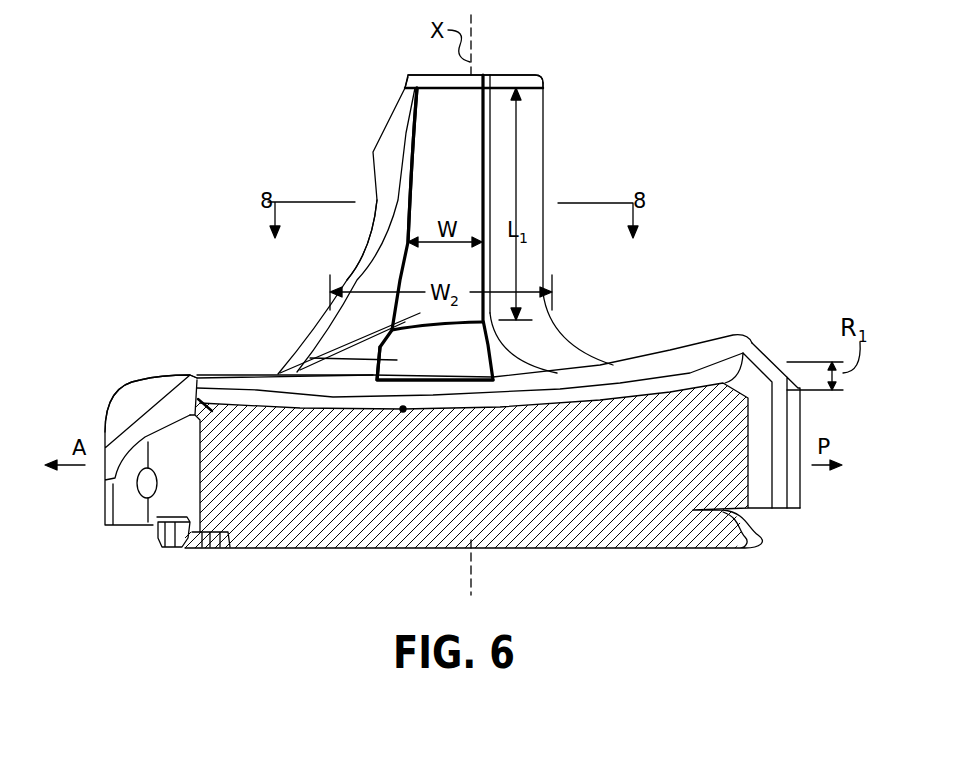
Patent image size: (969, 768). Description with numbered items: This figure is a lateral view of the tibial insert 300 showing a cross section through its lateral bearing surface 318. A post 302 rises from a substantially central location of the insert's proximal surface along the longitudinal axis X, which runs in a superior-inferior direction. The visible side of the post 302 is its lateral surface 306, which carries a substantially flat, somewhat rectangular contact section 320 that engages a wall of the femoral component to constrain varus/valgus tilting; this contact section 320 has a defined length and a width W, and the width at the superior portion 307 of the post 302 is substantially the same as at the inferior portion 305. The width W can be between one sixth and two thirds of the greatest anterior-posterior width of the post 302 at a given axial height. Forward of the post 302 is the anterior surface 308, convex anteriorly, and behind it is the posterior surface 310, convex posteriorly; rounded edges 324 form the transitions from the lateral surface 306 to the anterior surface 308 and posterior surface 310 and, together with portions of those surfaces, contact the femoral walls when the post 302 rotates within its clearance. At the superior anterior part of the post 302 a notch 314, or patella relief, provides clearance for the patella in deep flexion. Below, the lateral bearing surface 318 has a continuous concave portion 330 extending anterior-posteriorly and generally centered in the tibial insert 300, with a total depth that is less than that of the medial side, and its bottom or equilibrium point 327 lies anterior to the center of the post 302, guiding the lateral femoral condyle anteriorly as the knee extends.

The tibial insert 300 is at (150, 131).
The post 302 is at (527, 185).
The inferior portion 305 is at (340, 343).
The lateral surface 306 is at (347, 335).
The superior portion 307 is at (532, 118).
The anterior surface 308 is at (371, 222).
The posterior surface 310 is at (547, 217).
The notch 314 is at (381, 124).
The lateral bearing surface 318 is at (323, 403).
The contact section 320 is at (437, 167).
The rounded edges 324 is at (413, 120).
The equilibrium point 327 is at (470, 400).
The continuous concave portion 330 is at (497, 380).